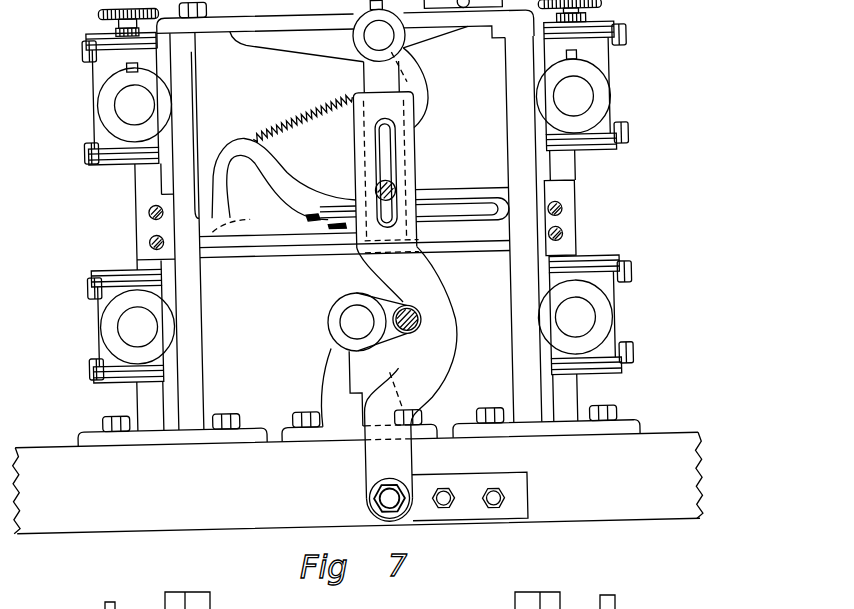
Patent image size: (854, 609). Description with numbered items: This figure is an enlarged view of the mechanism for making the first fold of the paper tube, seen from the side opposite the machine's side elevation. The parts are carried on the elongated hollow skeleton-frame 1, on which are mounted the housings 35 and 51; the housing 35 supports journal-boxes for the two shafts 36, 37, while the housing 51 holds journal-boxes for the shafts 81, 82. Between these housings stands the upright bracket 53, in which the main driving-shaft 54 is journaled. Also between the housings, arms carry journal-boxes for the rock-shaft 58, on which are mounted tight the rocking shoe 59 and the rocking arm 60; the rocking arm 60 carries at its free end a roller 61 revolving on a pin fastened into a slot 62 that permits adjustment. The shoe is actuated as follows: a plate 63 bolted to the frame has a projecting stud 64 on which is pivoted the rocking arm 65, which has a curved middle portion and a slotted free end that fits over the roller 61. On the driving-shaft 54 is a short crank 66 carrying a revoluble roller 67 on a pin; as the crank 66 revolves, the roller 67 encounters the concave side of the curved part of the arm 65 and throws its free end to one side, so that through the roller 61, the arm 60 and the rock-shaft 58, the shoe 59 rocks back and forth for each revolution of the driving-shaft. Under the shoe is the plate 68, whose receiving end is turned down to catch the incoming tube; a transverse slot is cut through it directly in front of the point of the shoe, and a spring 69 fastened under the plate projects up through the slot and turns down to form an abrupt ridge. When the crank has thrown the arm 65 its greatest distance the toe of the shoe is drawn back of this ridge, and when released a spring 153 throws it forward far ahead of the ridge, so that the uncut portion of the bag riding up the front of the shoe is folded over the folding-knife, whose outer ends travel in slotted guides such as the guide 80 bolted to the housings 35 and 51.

The frame 1 is at (357, 483).
The housing 35 is at (187, 231).
The upper shaft 36 is at (126, 86).
The shaft 37 is at (131, 326).
The housing 51 is at (523, 229).
The upright bracket 53 is at (326, 388).
The main driving-shaft 54 is at (356, 321).
The rock-shaft 58 is at (378, 35).
The rocking shoe 59 is at (428, 97).
The rocking arm 60 is at (385, 72).
The roller 61 is at (396, 187).
The slot 62 is at (384, 138).
The plate 63 is at (470, 496).
The stud 64 is at (389, 498).
The rocking arm 65 is at (409, 380).
The crank 66 is at (382, 312).
The roller 67 is at (421, 319).
The plate 68 is at (270, 192).
The spring 69 is at (316, 215).
The slotted guide 80 is at (283, 169).
The shaft 81 is at (581, 75).
The shaft 82 is at (585, 315).
The spring 153 is at (302, 114).